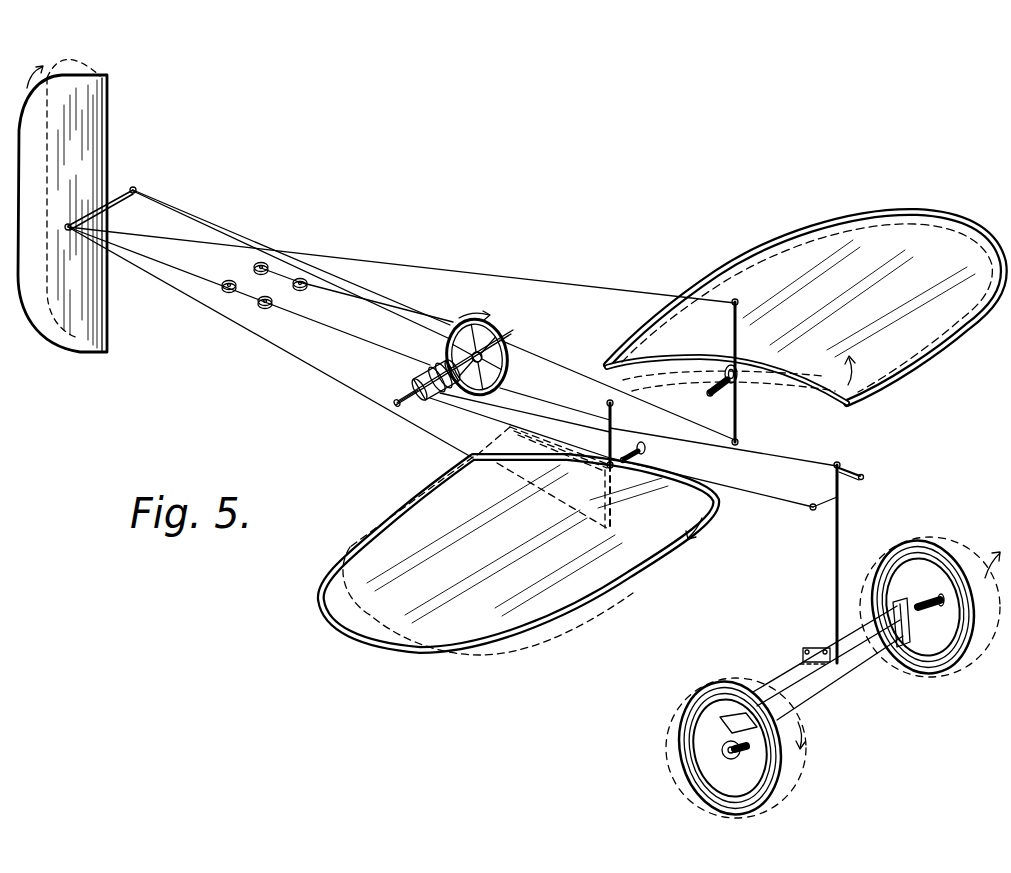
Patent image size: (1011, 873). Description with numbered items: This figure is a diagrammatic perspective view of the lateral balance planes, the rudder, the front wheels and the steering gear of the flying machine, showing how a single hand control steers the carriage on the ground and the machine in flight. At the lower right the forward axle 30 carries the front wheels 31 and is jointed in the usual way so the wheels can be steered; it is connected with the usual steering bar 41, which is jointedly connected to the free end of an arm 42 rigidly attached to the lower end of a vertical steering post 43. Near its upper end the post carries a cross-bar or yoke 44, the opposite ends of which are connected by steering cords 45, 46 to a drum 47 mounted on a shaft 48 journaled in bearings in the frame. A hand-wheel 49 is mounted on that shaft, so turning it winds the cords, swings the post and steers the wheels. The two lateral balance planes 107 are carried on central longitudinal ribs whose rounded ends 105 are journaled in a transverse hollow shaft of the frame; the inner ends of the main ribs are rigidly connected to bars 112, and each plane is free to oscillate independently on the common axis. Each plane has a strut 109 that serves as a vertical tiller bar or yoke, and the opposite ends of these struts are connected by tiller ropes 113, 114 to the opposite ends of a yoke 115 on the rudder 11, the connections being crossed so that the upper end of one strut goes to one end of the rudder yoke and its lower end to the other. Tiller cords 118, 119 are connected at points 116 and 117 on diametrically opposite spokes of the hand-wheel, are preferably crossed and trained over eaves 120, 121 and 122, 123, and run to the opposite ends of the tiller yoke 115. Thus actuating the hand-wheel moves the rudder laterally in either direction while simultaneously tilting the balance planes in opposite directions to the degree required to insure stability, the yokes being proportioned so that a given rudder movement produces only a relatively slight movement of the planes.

The rudder 11 is at (133, 121).
The forward axle 30 is at (815, 697).
The front wheels 31 is at (938, 673).
The steering bar 41 is at (787, 674).
The arm 42 is at (827, 648).
The vertical steering post 43 is at (835, 557).
The cross-bar or yoke 44 is at (850, 486).
The steering cord 45 is at (787, 500).
The steering cord 46 is at (800, 460).
The drum 47 is at (415, 378).
The shaft 48 is at (390, 400).
The hand-wheel 49 is at (447, 345).
The rounded ends 105 is at (710, 389).
The lateral balance planes 107 is at (662, 433).
The struts 109 is at (607, 425).
The bars 112 is at (803, 387).
The tiller rope 113 is at (533, 281).
The tiller rope 114 is at (572, 358).
The yoke 115 is at (118, 191).
The connection point 116 is at (460, 318).
The connection point 117 is at (470, 392).
The tiller cord 118 is at (352, 290).
The tiller cord 119 is at (197, 225).
The eave 120 is at (303, 277).
The eave 121 is at (222, 291).
The eave 122 is at (263, 263).
The eave 123 is at (260, 307).